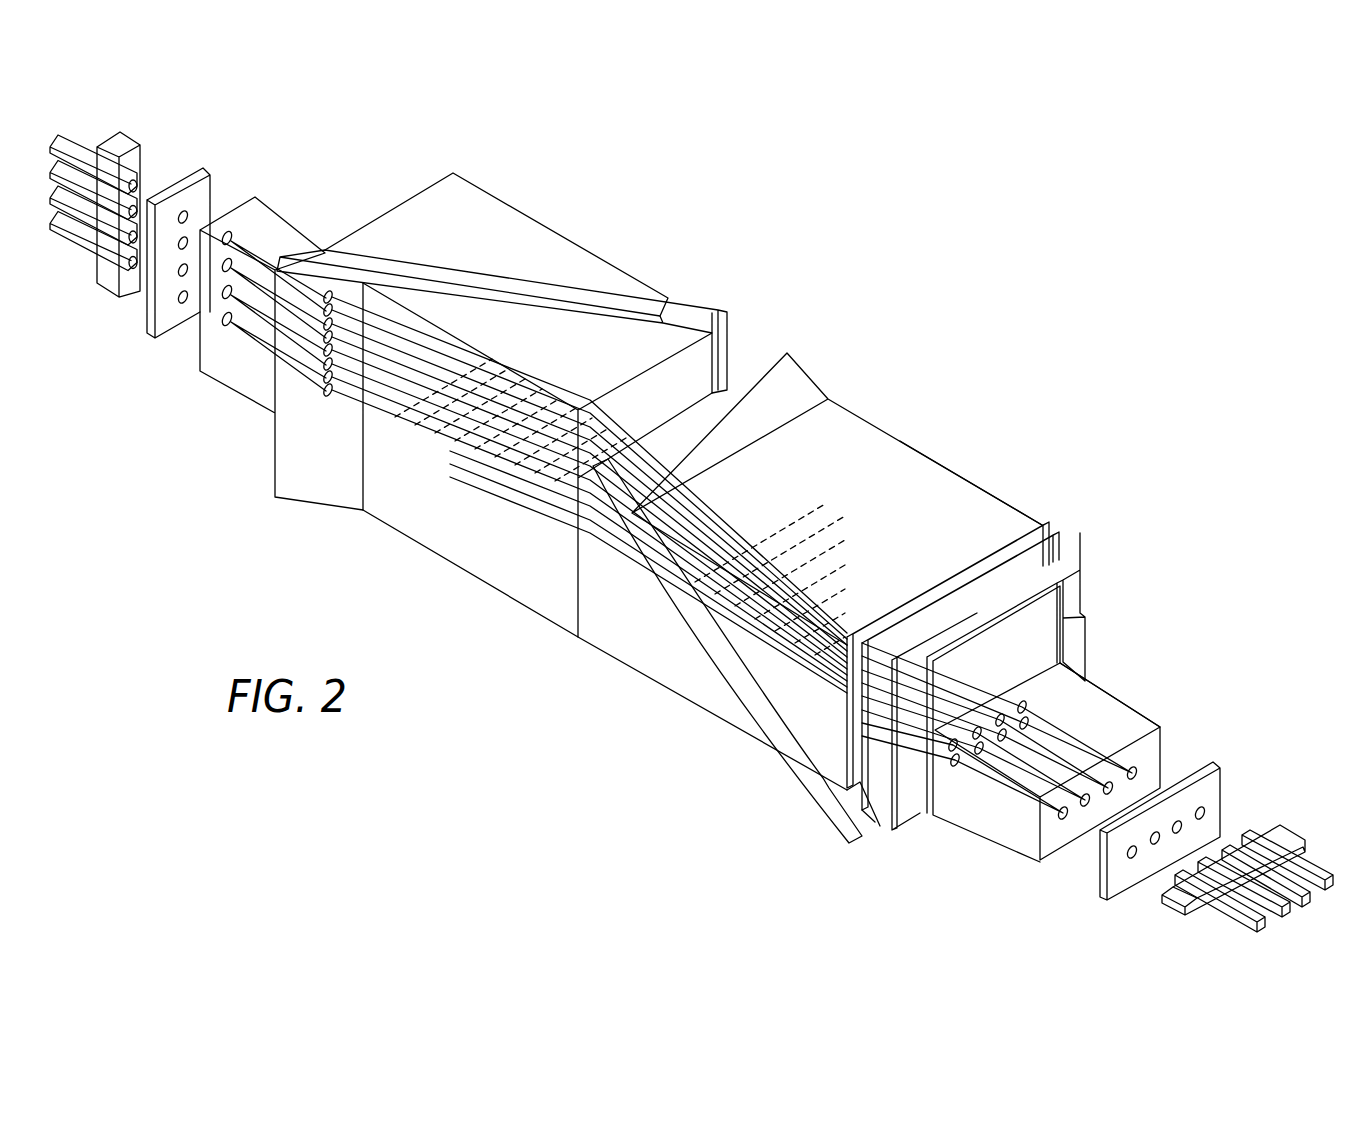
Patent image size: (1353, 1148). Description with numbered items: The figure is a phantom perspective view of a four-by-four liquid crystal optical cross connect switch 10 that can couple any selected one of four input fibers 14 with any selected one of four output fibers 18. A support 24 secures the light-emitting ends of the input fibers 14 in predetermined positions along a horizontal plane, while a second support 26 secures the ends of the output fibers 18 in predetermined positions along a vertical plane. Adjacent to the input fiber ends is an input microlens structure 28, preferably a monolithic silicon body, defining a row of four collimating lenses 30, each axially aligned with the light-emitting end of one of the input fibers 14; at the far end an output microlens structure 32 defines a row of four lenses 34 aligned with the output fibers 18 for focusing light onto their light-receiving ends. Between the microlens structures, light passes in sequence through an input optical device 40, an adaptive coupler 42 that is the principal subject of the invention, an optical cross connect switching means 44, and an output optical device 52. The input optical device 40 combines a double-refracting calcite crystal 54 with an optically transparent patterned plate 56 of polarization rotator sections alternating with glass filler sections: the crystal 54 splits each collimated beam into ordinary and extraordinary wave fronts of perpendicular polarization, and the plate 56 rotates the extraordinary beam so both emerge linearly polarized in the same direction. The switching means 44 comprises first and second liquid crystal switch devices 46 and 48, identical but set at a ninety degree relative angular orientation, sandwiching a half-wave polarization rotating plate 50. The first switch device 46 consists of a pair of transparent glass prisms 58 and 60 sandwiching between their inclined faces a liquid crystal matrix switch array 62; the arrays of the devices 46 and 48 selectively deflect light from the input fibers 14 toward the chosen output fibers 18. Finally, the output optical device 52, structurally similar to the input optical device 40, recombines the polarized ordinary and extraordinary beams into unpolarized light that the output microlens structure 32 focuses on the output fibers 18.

The optical switch 10 is at (701, 524).
The input fibers 14 is at (1244, 912).
The output fibers 18 is at (82, 213).
The support 24 is at (1291, 828).
The support 26 is at (136, 140).
The input microlens structure 28 is at (1175, 834).
The collimating lenses 30 is at (1155, 845).
The output microlens structure 32 is at (212, 229).
The lenses 34 is at (181, 240).
The input optical device 40 is at (1072, 748).
The adaptive coupler 42 is at (1079, 523).
The optical cross connect switching means 44 is at (717, 514).
The first liquid crystal switch device 46 is at (838, 499).
The second liquid crystal switch device 48 is at (728, 489).
The half-wave polarization rotating plate 50 is at (682, 405).
The output optical device 52 is at (283, 196).
The double-refracting crystal 54 is at (1149, 717).
The patterned plate 56 is at (1086, 578).
The transparent glass prism 58 is at (985, 483).
The transparent glass prism 60 is at (728, 727).
The liquid crystal matrix switch array 62 is at (700, 627).